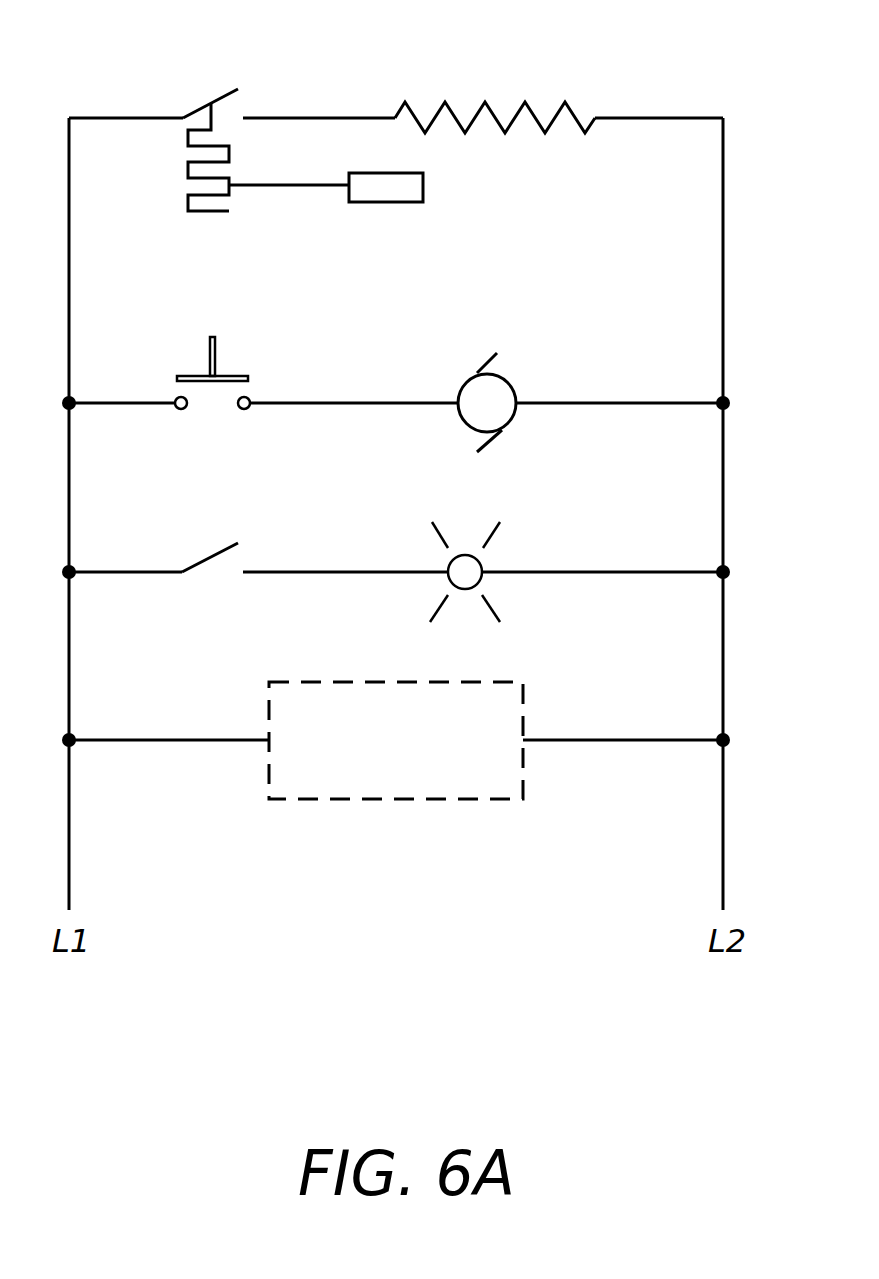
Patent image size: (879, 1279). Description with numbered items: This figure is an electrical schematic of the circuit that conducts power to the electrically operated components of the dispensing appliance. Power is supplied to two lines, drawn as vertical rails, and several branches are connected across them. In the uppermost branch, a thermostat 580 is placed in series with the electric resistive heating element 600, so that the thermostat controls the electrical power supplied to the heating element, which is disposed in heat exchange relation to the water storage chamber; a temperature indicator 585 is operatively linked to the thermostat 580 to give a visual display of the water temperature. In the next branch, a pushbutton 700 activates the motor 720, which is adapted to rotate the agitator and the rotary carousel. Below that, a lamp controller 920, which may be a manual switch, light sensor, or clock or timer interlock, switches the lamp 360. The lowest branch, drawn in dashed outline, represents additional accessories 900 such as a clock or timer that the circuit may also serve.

The thermostat 580 is at (218, 213).
The temperature indicator 585 is at (423, 192).
The heating element 600 is at (525, 103).
The pushbutton 700 is at (215, 358).
The motor 720 is at (503, 372).
The lamp controller 920 is at (210, 557).
The lamp 360 is at (480, 558).
The additional accessories 900 is at (453, 799).